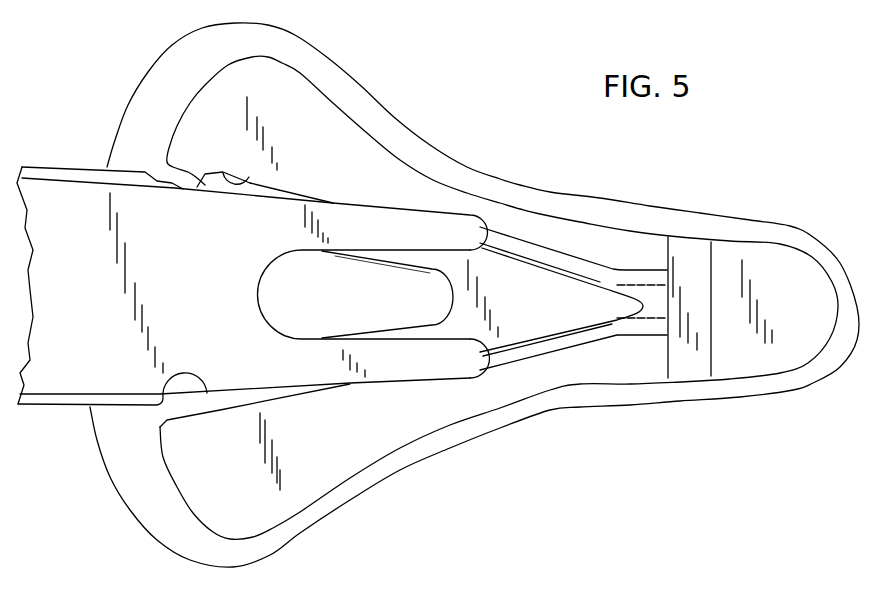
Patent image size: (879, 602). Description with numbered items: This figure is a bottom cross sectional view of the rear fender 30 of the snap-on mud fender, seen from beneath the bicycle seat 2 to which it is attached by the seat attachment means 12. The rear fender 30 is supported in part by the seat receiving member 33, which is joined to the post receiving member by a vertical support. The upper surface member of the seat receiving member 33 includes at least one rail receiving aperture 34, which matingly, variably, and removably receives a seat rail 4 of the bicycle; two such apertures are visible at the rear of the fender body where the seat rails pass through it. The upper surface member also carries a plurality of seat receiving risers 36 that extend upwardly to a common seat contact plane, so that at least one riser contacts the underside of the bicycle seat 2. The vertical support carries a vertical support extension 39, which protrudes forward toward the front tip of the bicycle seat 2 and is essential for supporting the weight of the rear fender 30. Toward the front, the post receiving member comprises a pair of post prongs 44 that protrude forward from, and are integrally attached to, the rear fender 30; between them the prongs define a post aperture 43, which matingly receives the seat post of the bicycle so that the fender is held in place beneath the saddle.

The bicycle seat 2 is at (618, 267).
The seat rail 4 is at (636, 215).
The seat attachment means 12 is at (474, 295).
The rear fender 30 is at (63, 218).
The seat receiving member 33 is at (53, 406).
The rail receiving aperture 34 is at (250, 177).
The seat receiving riser 36 is at (642, 304).
The vertical support extension 39 is at (387, 331).
The post aperture 43 is at (263, 309).
The post prong 44 is at (383, 237).